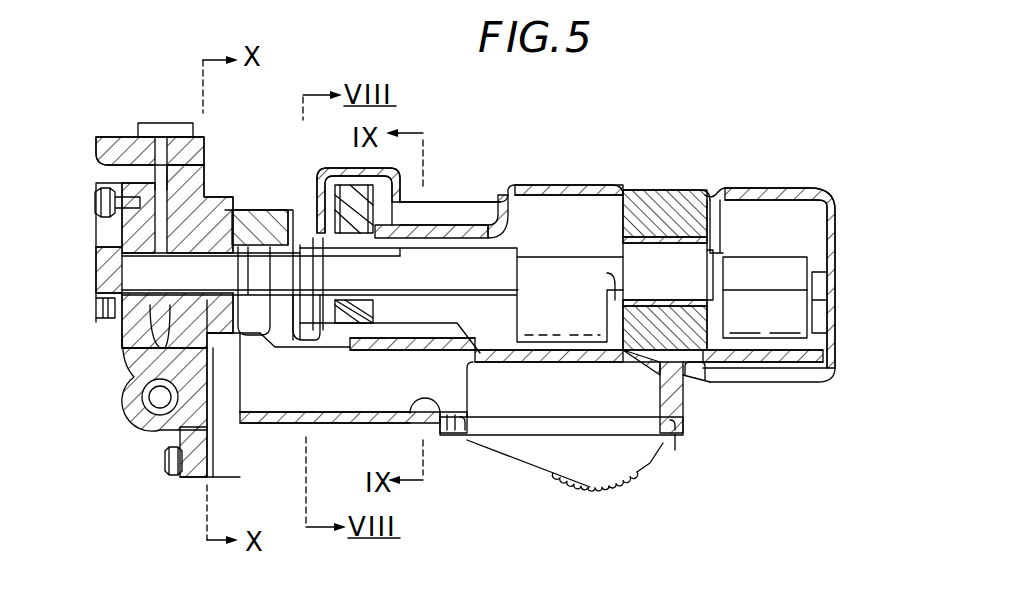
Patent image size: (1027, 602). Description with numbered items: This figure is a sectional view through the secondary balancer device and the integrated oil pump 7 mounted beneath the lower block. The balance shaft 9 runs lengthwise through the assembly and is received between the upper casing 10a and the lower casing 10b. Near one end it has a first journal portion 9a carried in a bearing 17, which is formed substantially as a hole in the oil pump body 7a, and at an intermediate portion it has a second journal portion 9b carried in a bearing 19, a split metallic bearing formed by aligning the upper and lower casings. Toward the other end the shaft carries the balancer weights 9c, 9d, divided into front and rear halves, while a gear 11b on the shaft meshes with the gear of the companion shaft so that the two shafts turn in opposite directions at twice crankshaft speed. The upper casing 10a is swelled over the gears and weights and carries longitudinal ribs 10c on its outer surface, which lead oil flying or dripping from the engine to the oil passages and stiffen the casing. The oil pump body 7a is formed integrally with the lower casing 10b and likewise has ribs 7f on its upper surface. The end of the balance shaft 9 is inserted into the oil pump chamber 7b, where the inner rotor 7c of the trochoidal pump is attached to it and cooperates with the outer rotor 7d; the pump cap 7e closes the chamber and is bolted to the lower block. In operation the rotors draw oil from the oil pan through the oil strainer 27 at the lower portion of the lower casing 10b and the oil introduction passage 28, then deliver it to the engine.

The oil pump 7 is at (212, 186).
The oil pump body 7a is at (262, 440).
The oil pump chamber 7b is at (119, 360).
The inner rotor 7c is at (115, 334).
The outer rotor 7d is at (117, 190).
The pump cap 7e is at (125, 132).
The ribs 7f is at (251, 216).
The balance shaft 9 is at (483, 260).
The first journal portion 9a is at (255, 333).
The second journal portion 9b is at (688, 234).
The balancer weight 9c is at (572, 358).
The balancer weight 9d is at (766, 335).
The upper casing 10a is at (791, 192).
The lower casing 10b is at (810, 385).
The ribs 10c is at (448, 222).
The gear 11b is at (352, 335).
The bearing 17 is at (297, 228).
The bearing 19 is at (690, 364).
The oil strainer 27 is at (645, 470).
The oil introduction passage 28 is at (437, 418).